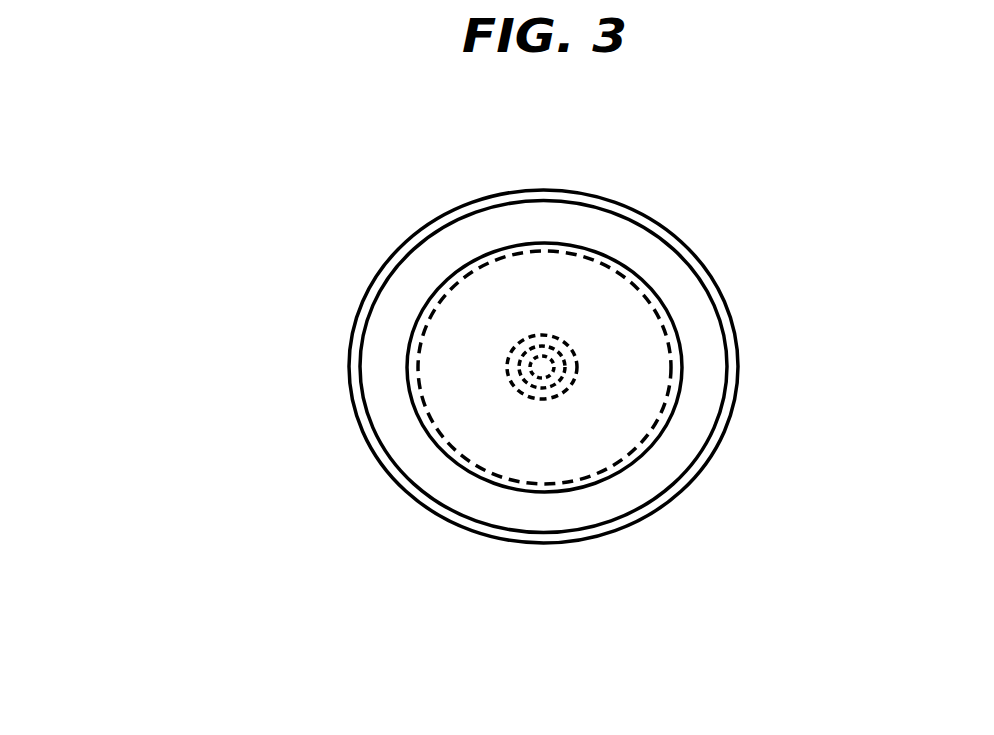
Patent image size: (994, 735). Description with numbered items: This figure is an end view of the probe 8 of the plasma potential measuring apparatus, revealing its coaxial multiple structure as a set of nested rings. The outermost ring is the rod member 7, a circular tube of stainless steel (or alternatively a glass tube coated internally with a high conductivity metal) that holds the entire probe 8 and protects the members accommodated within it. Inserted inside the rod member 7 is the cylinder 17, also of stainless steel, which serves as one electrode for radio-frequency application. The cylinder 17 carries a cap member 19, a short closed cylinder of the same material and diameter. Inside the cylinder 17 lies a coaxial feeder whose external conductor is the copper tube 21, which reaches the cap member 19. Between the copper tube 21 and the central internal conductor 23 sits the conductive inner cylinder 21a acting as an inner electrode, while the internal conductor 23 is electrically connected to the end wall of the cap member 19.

The probe 8 is at (266, 207).
The rod member 7 is at (349, 390).
The cylinder 17 is at (677, 410).
The cap member 19 is at (447, 405).
The copper tube 21 is at (512, 352).
The inner cylinder 21a is at (560, 355).
The internal conductor 23 is at (548, 377).